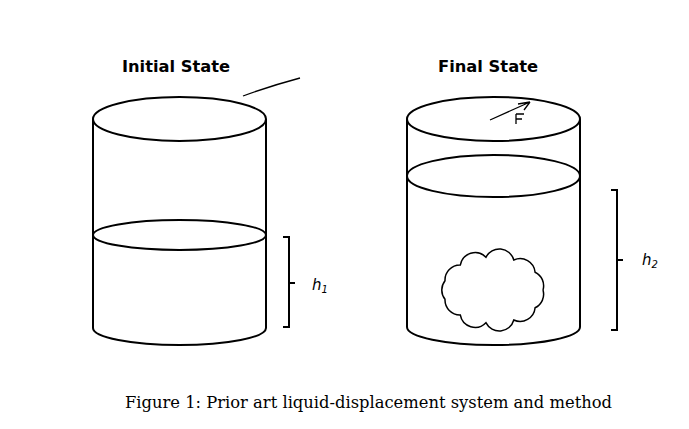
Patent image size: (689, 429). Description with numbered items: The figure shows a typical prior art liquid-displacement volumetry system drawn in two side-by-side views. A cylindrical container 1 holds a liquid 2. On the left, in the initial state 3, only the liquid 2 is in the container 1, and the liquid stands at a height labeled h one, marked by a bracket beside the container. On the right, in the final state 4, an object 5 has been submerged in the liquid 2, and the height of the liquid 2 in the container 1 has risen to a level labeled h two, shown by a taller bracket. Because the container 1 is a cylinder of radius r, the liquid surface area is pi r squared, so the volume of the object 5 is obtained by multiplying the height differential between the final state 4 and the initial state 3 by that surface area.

The cylindrical container 1 is at (93, 207).
The liquid 2 is at (108, 294).
The initial state 3 is at (243, 96).
The final state 4 is at (586, 85).
The object 5 is at (524, 293).